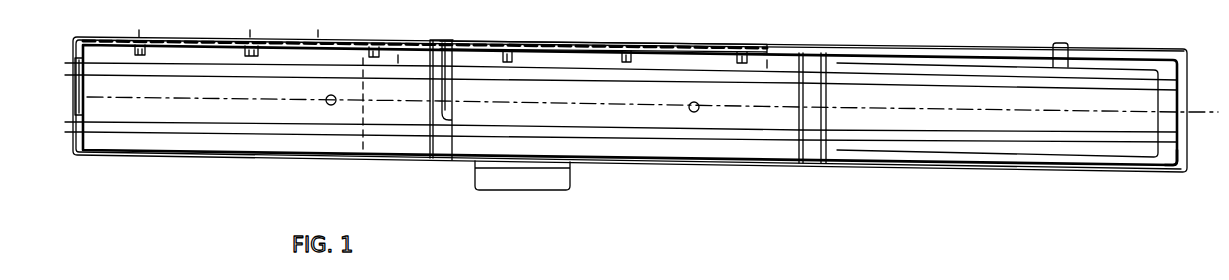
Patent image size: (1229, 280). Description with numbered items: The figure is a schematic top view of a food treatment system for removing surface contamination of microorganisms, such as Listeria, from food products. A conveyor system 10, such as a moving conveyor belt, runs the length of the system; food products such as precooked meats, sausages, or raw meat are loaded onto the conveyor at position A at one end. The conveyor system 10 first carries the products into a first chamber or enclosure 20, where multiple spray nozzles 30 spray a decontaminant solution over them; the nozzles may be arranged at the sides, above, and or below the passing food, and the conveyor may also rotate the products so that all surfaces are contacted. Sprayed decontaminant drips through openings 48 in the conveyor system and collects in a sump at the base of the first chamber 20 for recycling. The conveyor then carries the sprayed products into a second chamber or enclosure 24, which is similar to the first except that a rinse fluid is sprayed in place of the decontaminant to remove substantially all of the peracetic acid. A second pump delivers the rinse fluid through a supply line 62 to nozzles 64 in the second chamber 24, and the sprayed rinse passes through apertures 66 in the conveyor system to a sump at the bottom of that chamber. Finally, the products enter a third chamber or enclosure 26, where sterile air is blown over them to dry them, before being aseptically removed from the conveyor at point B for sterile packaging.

The conveyor system 10 is at (108, 82).
The first chamber 20 is at (404, 146).
The second chamber 24 is at (782, 150).
The third chamber 26 is at (1172, 167).
The spray nozzles 30 is at (146, 37).
The openings 48 is at (331, 105).
The supply line 62 is at (565, 42).
The nozzles 64 is at (304, 35).
The apertures 66 is at (694, 112).
The loading position A is at (73, 87).
The removal point B is at (1180, 128).